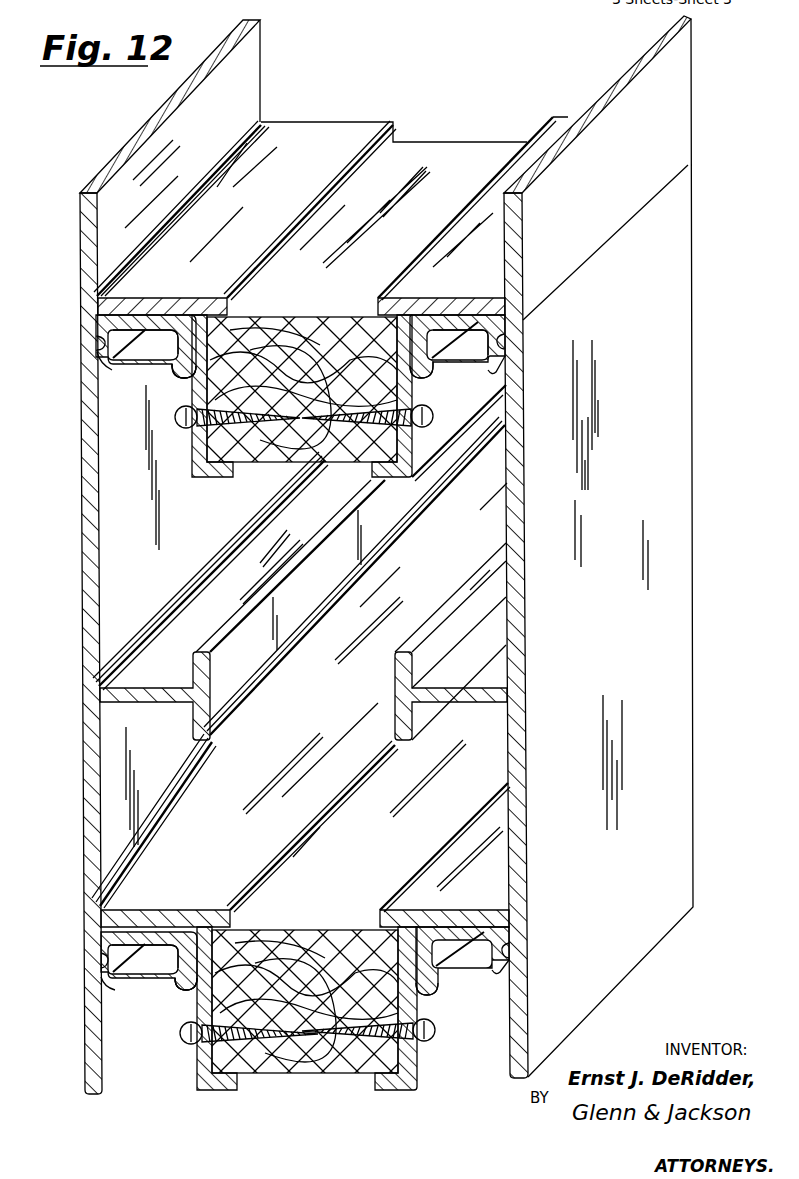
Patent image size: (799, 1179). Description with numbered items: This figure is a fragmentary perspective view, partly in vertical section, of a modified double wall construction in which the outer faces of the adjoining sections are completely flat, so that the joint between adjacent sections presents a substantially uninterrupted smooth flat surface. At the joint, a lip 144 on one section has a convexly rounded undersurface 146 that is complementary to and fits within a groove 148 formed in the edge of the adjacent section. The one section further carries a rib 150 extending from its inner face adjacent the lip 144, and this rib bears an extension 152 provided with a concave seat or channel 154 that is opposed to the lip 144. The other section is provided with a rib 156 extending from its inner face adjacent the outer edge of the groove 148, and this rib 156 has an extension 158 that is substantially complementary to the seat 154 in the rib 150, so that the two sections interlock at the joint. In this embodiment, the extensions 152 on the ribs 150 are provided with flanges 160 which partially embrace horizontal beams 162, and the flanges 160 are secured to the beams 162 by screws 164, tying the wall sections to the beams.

The lip 144 is at (80, 302).
The convexly rounded undersurface 146 is at (98, 360).
The groove 148 is at (90, 344).
The rib 150 is at (143, 298).
The extension 152 is at (190, 468).
The concave seat or channel 154 is at (174, 368).
The rib 156 is at (176, 345).
The extension 158 is at (178, 380).
The flanges 160 is at (377, 300).
The horizontal beams 162 is at (270, 463).
The screws 164 is at (178, 423).